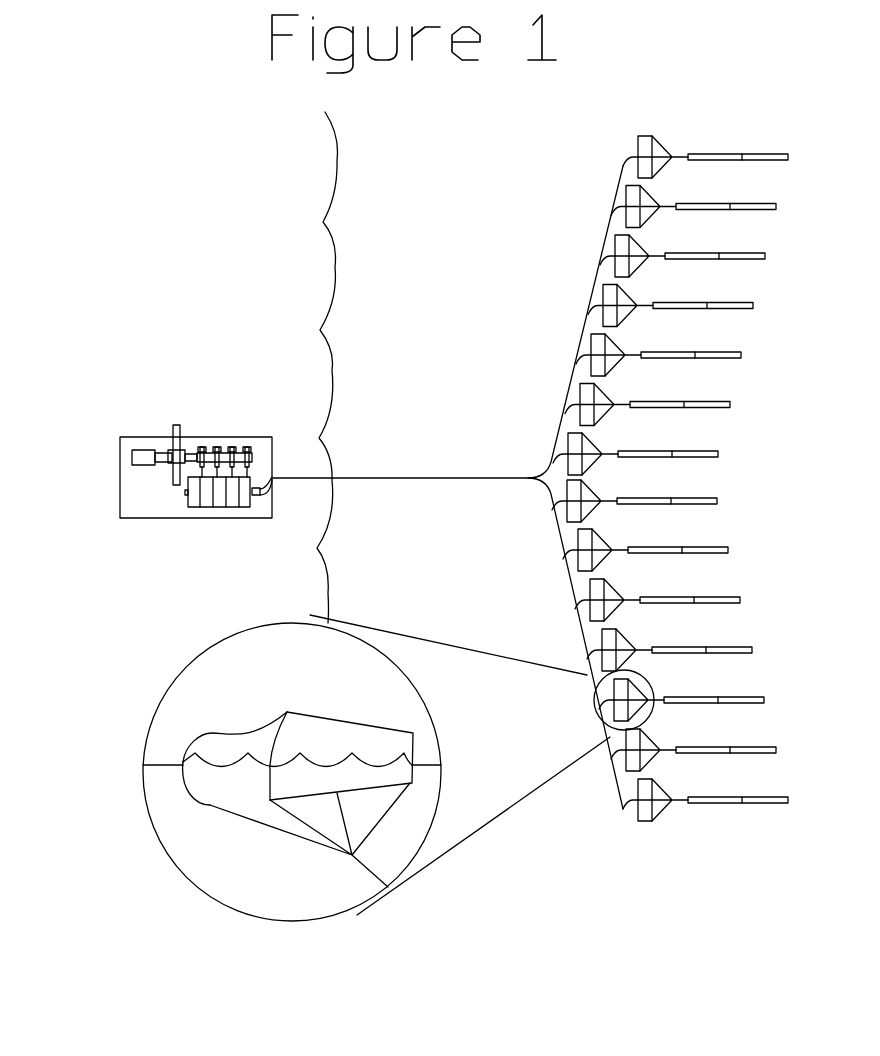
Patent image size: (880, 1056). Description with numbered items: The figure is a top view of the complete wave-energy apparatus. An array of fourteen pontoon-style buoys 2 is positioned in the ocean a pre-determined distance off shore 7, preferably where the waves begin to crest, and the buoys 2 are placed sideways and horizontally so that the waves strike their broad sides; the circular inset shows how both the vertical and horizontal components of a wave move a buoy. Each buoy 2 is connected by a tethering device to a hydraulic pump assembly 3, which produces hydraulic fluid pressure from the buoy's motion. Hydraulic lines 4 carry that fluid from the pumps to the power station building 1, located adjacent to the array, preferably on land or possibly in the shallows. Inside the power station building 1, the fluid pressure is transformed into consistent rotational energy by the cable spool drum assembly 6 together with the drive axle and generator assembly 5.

The power station building 1 is at (147, 459).
The buoys 2 is at (640, 830).
The hydraulic pump assembly 3 is at (720, 805).
The hydraulic lines 4 is at (575, 330).
The drive axle and generator assembly 5 is at (137, 475).
The cable spool drum assembly 6 is at (182, 508).
The shore 7 is at (323, 182).